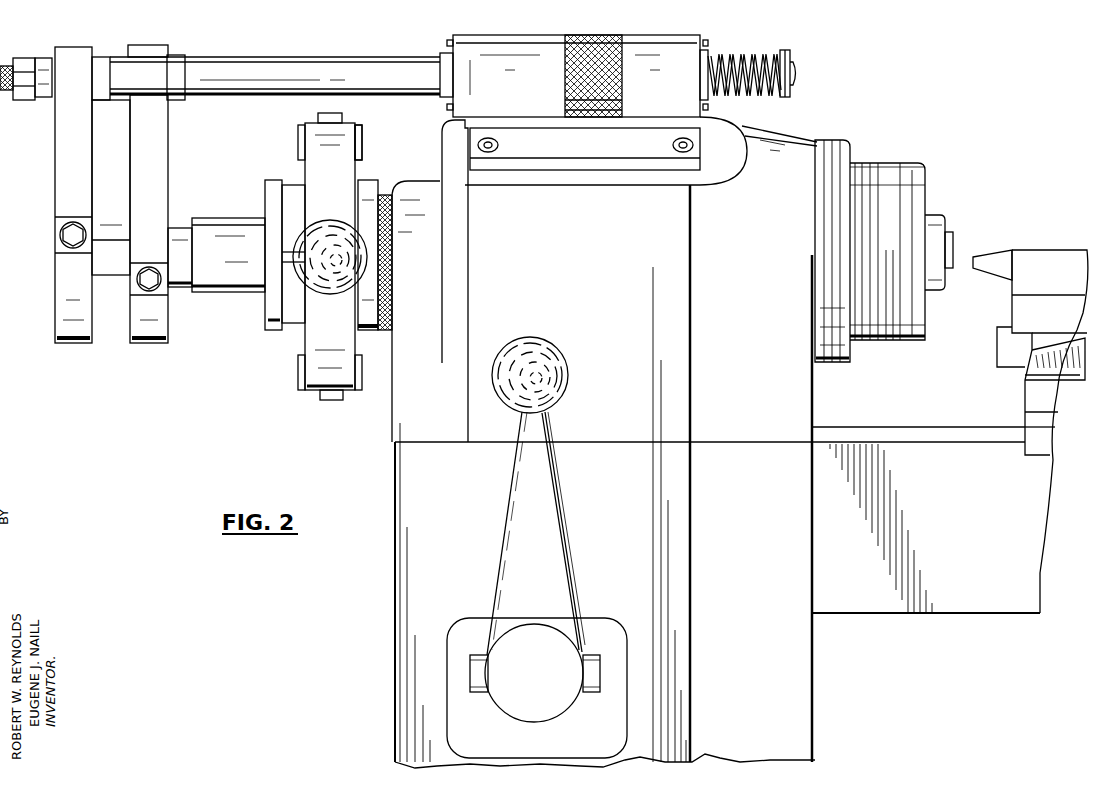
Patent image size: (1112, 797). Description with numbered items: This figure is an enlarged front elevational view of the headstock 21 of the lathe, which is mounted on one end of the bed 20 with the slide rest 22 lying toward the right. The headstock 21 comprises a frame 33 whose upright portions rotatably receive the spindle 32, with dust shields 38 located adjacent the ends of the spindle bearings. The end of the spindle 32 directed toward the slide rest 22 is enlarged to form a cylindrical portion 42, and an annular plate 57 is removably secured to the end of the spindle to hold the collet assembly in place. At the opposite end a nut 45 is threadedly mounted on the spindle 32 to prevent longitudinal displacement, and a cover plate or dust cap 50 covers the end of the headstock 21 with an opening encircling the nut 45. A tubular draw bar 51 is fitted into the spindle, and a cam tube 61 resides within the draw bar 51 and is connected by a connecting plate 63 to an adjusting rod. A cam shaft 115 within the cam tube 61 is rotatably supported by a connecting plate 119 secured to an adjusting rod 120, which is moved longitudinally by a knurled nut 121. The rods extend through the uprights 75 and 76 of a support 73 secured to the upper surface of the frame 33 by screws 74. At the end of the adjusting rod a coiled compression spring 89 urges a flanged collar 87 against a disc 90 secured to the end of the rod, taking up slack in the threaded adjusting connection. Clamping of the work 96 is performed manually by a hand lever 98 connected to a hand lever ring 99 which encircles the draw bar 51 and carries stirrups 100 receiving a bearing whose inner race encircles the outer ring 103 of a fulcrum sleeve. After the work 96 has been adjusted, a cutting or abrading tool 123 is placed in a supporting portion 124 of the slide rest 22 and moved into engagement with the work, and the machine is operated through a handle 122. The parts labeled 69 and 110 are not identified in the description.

The bed 20 is at (955, 610).
The headstock 21 is at (398, 414).
The slide rest 22 is at (1018, 420).
The spindle 32 is at (930, 188).
The frame 33 is at (805, 143).
The dust shields 38 is at (822, 147).
The cylindrical portion 42 is at (885, 163).
The nut 45 is at (385, 195).
The cover plate or dust cap 50 is at (420, 180).
The tubular draw bar 51 is at (236, 275).
The annular plate 57 is at (907, 167).
The cam tube 61 is at (183, 267).
The connecting plate 63 is at (157, 135).
The nut 69 is at (45, 56).
The support 73 is at (548, 50).
The screws 74 is at (500, 145).
The upright 75 is at (507, 50).
The upright 76 is at (682, 50).
The flanged collar 87 is at (782, 50).
The coiled compression spring 89 is at (732, 55).
The disc 90 is at (795, 60).
The work 96 is at (958, 268).
The hand lever 98 is at (322, 237).
The hand lever ring 99 is at (313, 148).
The stirrups 100 is at (363, 150).
The outer ring 103 is at (365, 318).
The flange 110 is at (275, 195).
The cam shaft 115 is at (117, 260).
The connecting plate 119 is at (62, 135).
The adjusting rod 120 is at (330, 70).
The knurled nut 121 is at (602, 45).
The handle 122 is at (552, 545).
The cutting or abrading tool 123 is at (985, 262).
The supporting portion 124 is at (1037, 390).